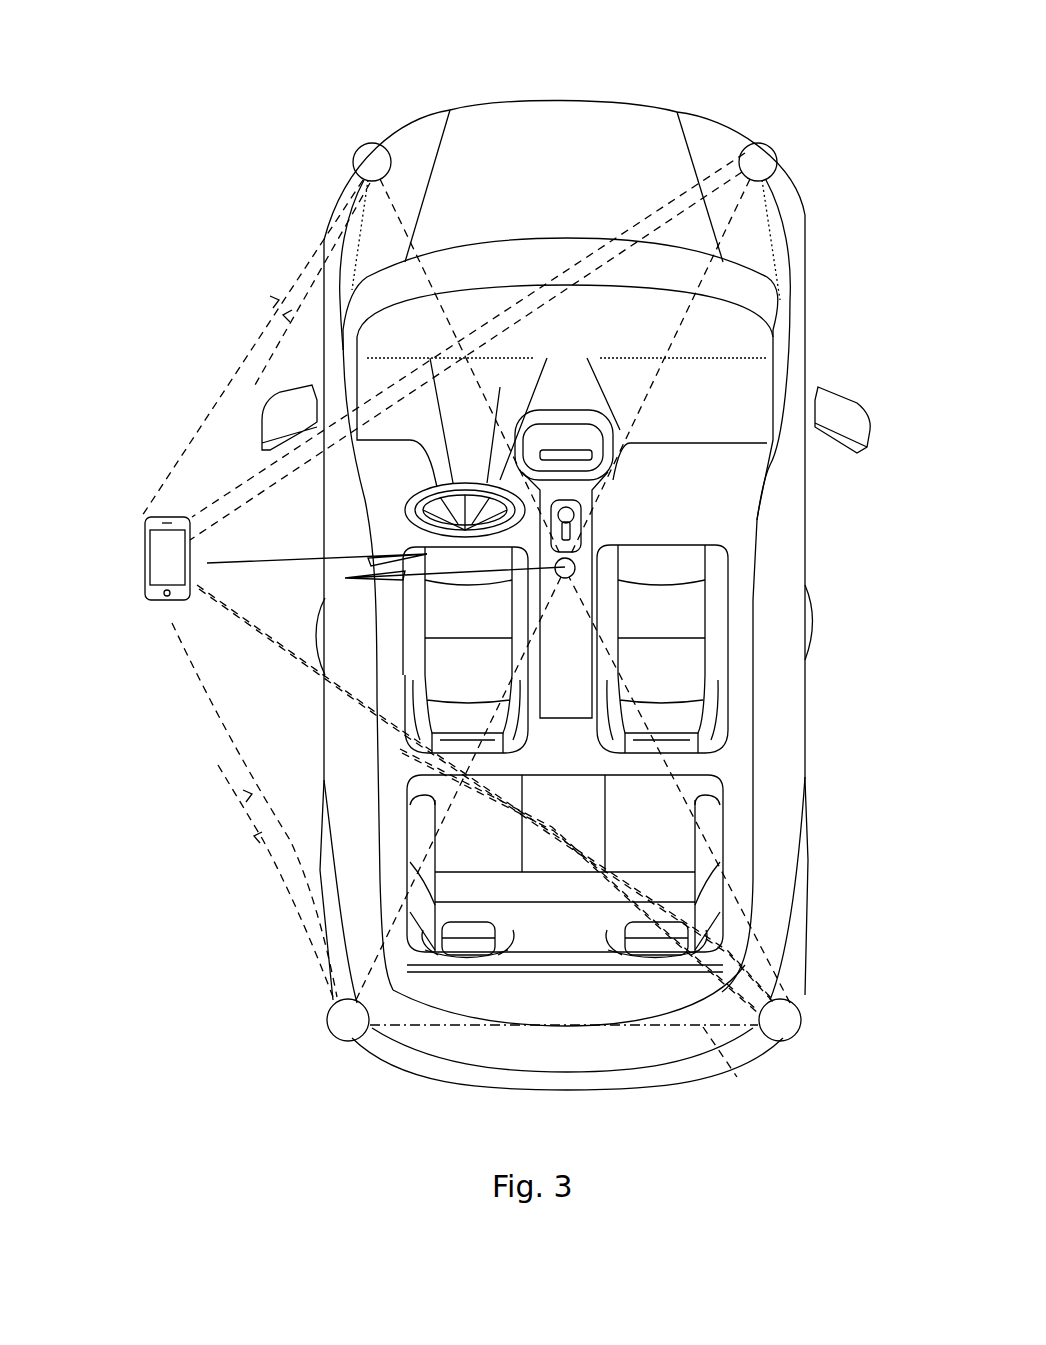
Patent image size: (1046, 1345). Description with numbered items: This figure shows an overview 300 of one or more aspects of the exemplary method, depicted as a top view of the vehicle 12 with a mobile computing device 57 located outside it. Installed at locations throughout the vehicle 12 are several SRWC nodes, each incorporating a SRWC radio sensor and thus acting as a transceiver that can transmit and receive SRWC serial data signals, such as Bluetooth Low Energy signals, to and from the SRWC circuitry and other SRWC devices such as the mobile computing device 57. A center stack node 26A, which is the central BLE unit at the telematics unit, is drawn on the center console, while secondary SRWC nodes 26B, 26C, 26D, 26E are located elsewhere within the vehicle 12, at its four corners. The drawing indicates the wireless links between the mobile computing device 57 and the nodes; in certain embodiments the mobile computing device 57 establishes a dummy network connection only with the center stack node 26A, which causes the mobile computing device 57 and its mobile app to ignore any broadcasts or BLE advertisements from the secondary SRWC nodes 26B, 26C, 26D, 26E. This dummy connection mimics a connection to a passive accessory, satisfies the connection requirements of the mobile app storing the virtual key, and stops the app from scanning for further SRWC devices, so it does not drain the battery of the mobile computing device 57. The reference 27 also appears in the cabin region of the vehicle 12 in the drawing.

The vehicle communication system overview 300 is at (572, 47).
The vehicle 12 is at (310, 675).
The center stack node 26A is at (318, 511).
The secondary SRWC node 26B is at (366, 144).
The secondary SRWC node 26C is at (762, 143).
The secondary SRWC node 26D is at (327, 1018).
The secondary SRWC node 26E is at (801, 1018).
The vehicle cabin / passenger compartment 27 is at (455, 826).
The mobile computing device 57 is at (143, 552).